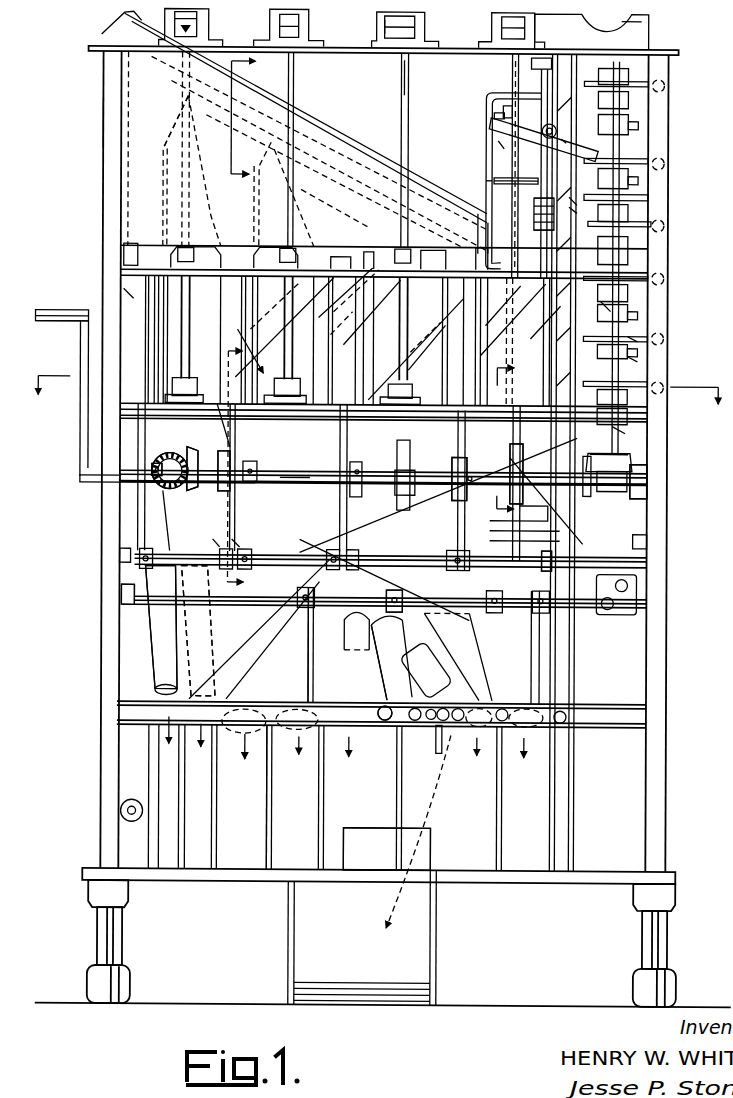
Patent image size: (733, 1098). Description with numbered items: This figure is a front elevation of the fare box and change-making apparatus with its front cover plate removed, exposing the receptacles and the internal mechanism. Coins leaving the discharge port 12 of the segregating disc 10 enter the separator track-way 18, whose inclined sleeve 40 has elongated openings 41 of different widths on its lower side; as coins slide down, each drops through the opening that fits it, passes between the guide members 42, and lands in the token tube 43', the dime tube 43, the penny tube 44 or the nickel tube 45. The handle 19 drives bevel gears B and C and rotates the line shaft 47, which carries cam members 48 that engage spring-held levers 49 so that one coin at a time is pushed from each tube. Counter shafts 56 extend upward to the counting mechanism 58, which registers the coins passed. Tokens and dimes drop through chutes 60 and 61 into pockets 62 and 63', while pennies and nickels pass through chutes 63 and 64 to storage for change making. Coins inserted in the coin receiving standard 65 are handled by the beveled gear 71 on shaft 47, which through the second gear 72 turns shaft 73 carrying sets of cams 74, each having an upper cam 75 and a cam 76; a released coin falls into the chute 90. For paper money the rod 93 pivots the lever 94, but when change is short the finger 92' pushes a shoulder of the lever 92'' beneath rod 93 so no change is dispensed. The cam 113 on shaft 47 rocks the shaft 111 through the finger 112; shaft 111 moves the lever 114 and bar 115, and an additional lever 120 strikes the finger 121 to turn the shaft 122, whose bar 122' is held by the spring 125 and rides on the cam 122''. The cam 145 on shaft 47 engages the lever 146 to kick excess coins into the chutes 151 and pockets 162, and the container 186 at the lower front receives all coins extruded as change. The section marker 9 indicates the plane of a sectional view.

The separator track-way 18 is at (135, 128).
The handle 19 is at (58, 308).
The sleeve 40 is at (355, 160).
The elongated openings 41 is at (170, 72).
The guide members 42 is at (256, 214).
The tube 43 is at (204, 285).
The tube 43' is at (104, 289).
The tube 44 is at (338, 310).
The tube 45 is at (450, 306).
The line shaft 47 is at (297, 474).
The cam members 48 is at (338, 455).
The levers 49 is at (236, 544).
The shafts 56 is at (407, 77).
The counting mechanism 58 is at (385, 27).
The chute 60 is at (166, 541).
The chute 61 is at (214, 543).
The pocket 62 is at (163, 667).
The chute 63 is at (391, 466).
The pocket 63' is at (198, 679).
The chute 64 is at (463, 451).
The coin receiving standard 65 is at (636, 36).
The beveled gear 71 is at (597, 492).
The second gear 72 is at (600, 454).
The shaft 73 is at (620, 431).
The sets of cams 74 is at (605, 307).
The upper cam 75 is at (633, 340).
The cam 76 is at (628, 358).
The chute 90 is at (484, 188).
The finger 92' is at (498, 192).
The lever 92'' is at (477, 143).
The rod 93 is at (495, 117).
The lever 94 is at (567, 140).
The shaft 111 is at (135, 605).
The finger 112 is at (402, 587).
The cam 113 is at (413, 490).
The lever 114 is at (312, 674).
The bar 115 is at (386, 727).
The additional lever 120 is at (557, 554).
The finger 121 is at (560, 546).
The shaft 122 is at (552, 521).
The bar 122' is at (643, 183).
The cam 122'' is at (644, 198).
The spring 125 is at (548, 214).
The cam 145 is at (457, 487).
The lever 146 is at (495, 456).
The chutes 151 is at (357, 700).
The pockets 162 is at (289, 797).
The container 186 is at (429, 932).
The bevel gear B is at (150, 487).
The bevel gear C is at (210, 490).
The section line 9 is at (222, 462).
The segregating disc 10 is at (531, 439).
The discharge port 12 is at (380, 417).